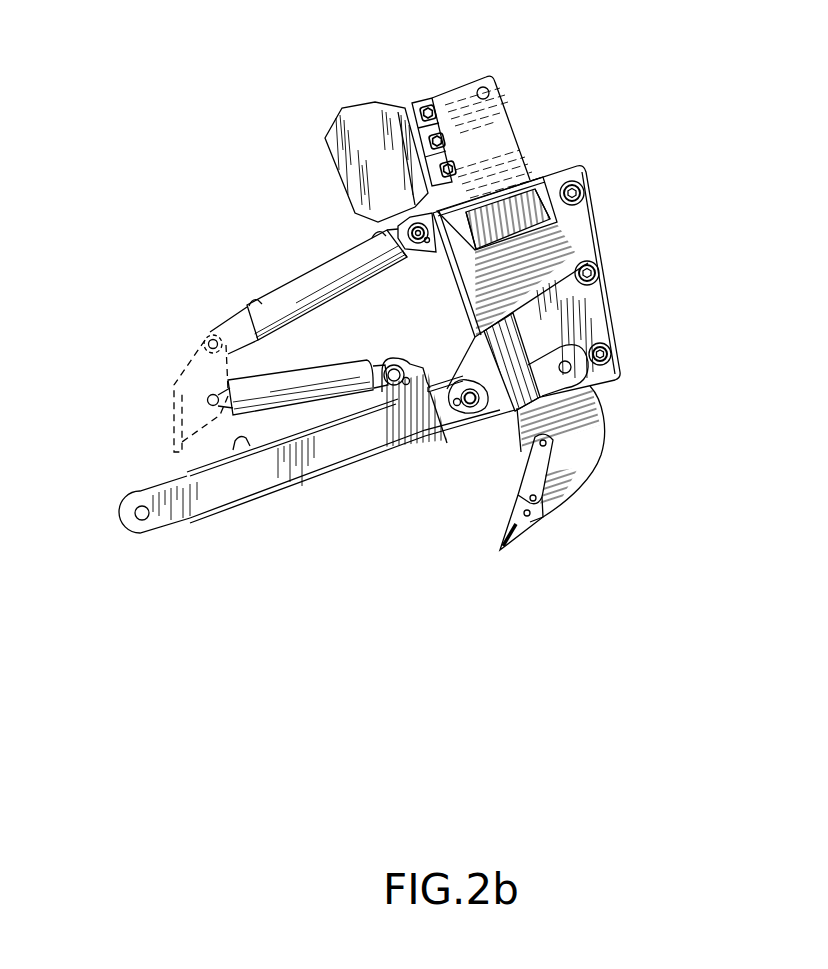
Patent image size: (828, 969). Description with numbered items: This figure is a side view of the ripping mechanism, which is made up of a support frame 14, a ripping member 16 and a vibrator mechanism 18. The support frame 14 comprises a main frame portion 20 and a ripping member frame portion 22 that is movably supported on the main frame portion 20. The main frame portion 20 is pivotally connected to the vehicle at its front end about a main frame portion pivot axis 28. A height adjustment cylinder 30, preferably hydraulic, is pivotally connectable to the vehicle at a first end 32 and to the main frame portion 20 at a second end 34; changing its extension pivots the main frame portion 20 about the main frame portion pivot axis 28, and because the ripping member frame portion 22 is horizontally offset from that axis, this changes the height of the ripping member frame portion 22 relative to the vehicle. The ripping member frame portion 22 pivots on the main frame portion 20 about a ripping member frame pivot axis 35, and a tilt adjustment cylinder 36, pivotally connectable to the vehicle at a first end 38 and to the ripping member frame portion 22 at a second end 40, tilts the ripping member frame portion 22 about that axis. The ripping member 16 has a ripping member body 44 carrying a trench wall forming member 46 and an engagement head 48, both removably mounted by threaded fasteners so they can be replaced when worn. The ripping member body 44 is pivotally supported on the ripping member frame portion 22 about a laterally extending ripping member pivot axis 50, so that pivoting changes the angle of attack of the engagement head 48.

The support frame 14 is at (330, 490).
The ripping member 16 is at (596, 460).
The vibrator mechanism 18 is at (357, 106).
The main frame portion 20 is at (377, 443).
The ripping member frame portion 22 is at (589, 250).
The main frame portion pivot axis 28 is at (142, 513).
The height adjustment cylinder 30 is at (298, 382).
The first end 32 is at (208, 397).
The second end 34 is at (396, 364).
The ripping member frame pivot axis 35 is at (472, 408).
The tilt adjustment cylinder 36 is at (307, 288).
The first end 38 is at (213, 335).
The second end 40 is at (419, 244).
The ripping member body 44 is at (513, 142).
The trench wall forming member 46 is at (517, 437).
The engagement head 48 is at (508, 520).
The ripping member pivot axis 50 is at (567, 369).